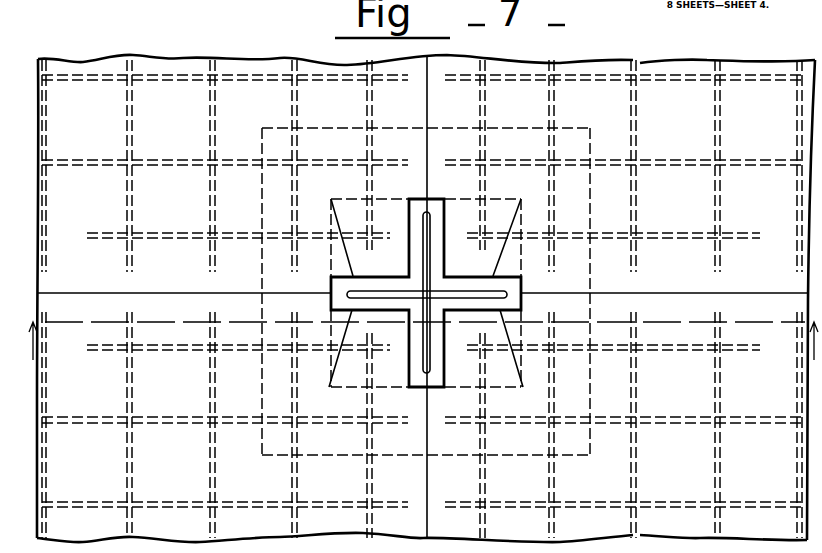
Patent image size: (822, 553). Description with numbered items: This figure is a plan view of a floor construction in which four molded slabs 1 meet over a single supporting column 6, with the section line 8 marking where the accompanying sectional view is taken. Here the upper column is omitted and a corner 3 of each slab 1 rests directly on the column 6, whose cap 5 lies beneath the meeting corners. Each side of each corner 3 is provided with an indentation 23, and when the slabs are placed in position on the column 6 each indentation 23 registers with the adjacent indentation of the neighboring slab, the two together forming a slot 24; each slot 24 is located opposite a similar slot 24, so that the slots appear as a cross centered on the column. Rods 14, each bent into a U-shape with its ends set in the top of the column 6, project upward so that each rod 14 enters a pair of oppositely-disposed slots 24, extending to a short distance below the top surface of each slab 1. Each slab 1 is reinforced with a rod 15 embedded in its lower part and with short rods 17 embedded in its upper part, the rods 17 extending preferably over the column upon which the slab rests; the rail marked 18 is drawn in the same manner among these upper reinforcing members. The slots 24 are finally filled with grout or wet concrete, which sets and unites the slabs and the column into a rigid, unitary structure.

The slab 1 is at (426, 298).
The corner 3 is at (425, 295).
The cap 5 is at (568, 128).
The column 6 is at (525, 214).
The section line 8— 8 is at (423, 350).
The rod 14 is at (500, 292).
The reinforcing rod 15 is at (127, 115).
The short rod 17 is at (480, 97).
The transverse rail 18 is at (617, 345).
The indentation 23 is at (405, 219).
The slot 24 is at (432, 212).